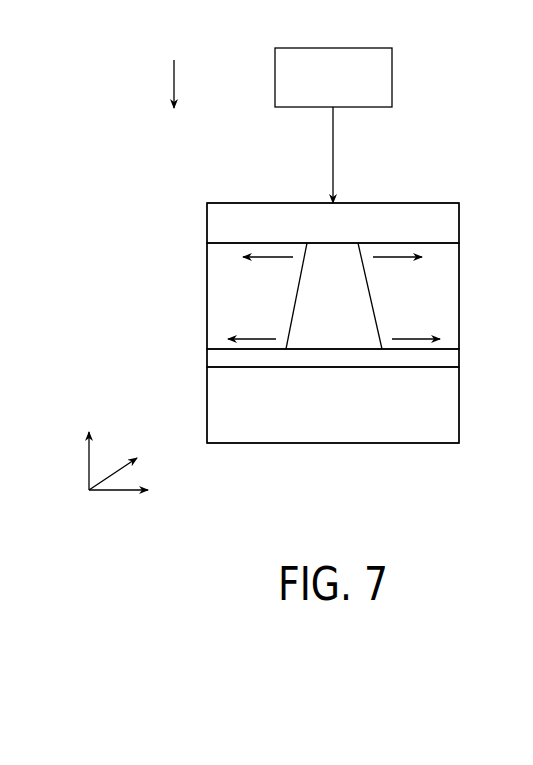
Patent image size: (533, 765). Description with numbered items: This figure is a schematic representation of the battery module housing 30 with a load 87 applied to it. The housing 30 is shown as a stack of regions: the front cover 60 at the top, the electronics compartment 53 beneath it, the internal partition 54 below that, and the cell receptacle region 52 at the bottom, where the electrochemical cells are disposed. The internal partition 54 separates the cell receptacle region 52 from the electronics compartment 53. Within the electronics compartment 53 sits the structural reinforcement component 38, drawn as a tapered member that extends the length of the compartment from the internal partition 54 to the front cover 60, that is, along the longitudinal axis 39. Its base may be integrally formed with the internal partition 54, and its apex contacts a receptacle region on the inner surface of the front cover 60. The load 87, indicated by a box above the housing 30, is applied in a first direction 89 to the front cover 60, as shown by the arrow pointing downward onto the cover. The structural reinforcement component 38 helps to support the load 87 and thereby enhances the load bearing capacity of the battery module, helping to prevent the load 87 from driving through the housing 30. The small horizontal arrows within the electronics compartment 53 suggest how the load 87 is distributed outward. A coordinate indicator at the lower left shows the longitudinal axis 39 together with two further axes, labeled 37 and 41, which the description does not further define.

The load 87 is at (392, 77).
The first direction 89 is at (172, 76).
The housing 30 is at (166, 315).
The front cover 60 is at (460, 225).
The electronics compartment 53 is at (412, 276).
The structural reinforcement component 38 is at (378, 312).
The internal partition 54 is at (452, 358).
The cell receptacle region 52 is at (418, 412).
The longitudinal axis 39 is at (88, 470).
The x-axis 41 is at (112, 495).
The z-axis 37 is at (108, 475).